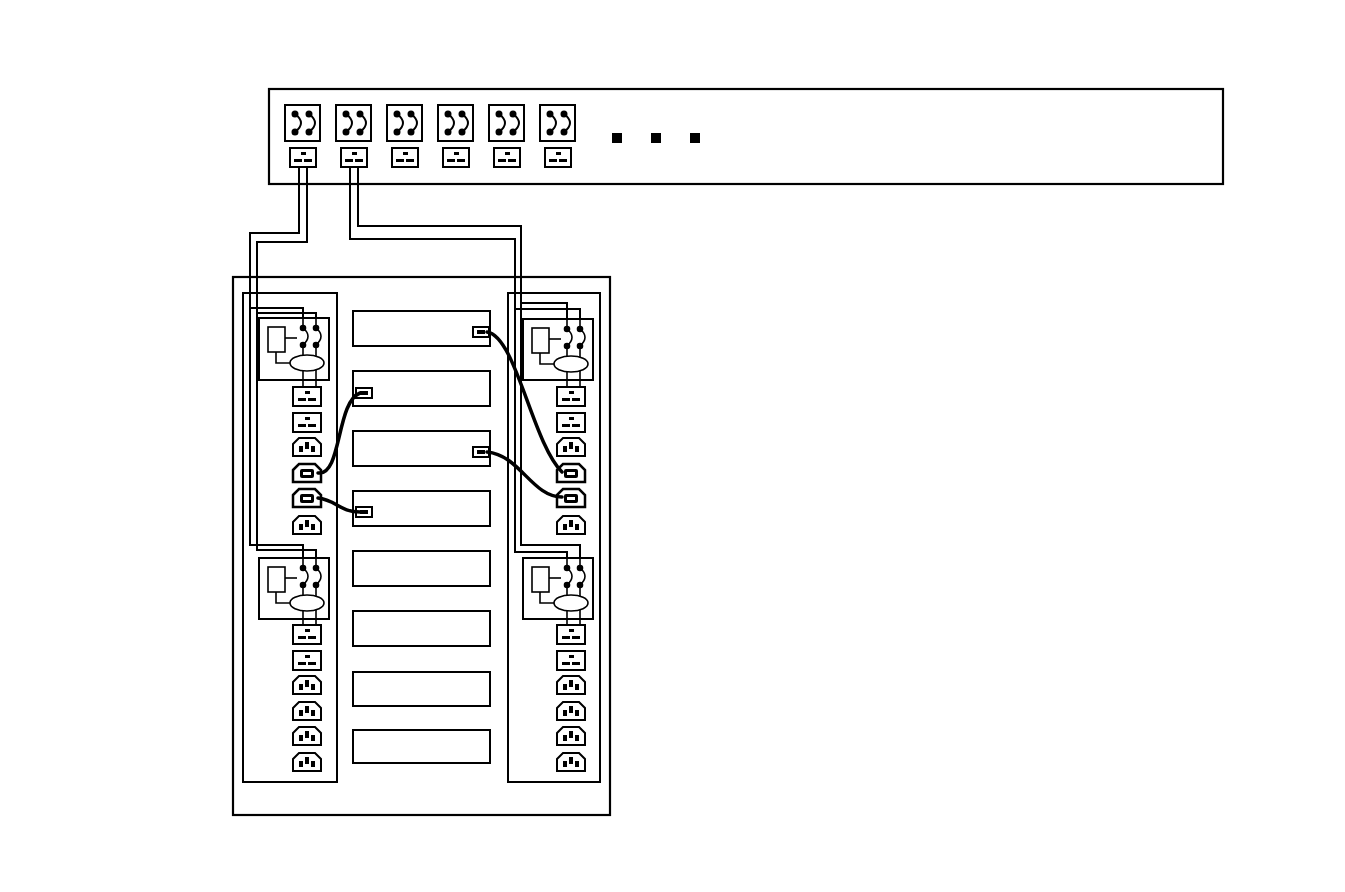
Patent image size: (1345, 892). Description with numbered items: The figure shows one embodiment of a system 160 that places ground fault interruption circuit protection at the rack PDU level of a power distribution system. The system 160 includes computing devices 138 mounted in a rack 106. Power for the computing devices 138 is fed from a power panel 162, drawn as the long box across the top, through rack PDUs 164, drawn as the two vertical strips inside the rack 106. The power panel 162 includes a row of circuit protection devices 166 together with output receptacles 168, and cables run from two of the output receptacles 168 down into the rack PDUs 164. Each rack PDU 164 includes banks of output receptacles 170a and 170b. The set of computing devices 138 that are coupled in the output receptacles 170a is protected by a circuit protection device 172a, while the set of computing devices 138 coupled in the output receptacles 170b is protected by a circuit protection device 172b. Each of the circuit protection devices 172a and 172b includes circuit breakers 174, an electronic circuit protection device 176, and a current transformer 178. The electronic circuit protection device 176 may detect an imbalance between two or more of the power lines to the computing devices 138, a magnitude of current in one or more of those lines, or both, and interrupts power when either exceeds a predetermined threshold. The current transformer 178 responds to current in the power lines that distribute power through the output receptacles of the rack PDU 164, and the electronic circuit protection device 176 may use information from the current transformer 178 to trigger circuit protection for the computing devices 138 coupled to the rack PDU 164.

The rack 106 is at (458, 804).
The computing device 138 is at (458, 761).
The system 160 is at (1302, 84).
The power panel 162 is at (1182, 167).
The rack PDU 164 is at (301, 304).
The circuit protection device 166 is at (290, 156).
The output receptacle 168 is at (285, 122).
The output receptacles 170a is at (268, 475).
The output receptacles 170b is at (264, 670).
The circuit protection device 172a is at (282, 317).
The circuit protection device 172b is at (268, 577).
The circuit breakers 174 is at (327, 342).
The electronic circuit protection device 176 is at (270, 335).
The current transformer 178 is at (323, 354).